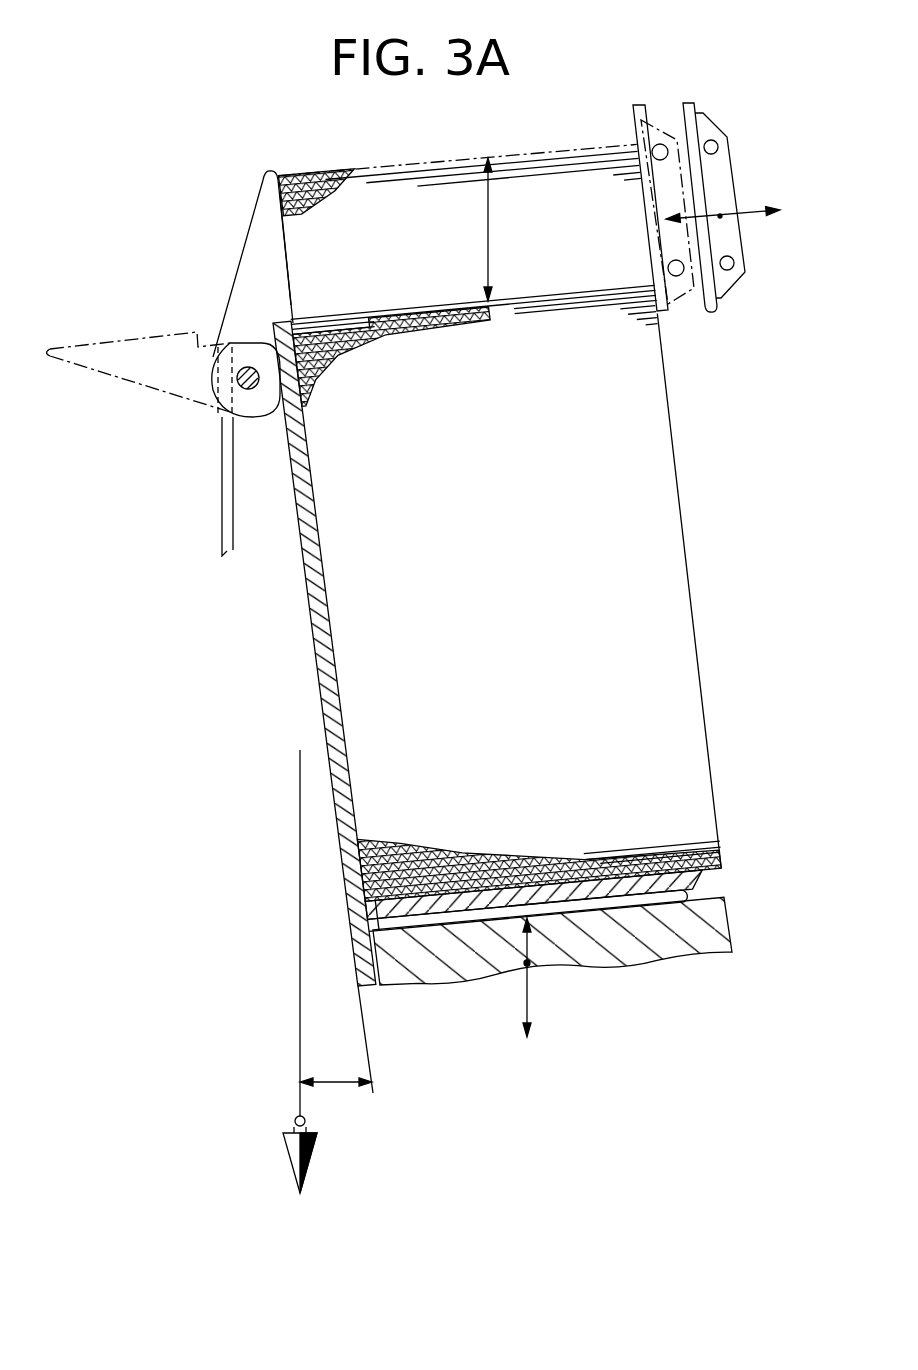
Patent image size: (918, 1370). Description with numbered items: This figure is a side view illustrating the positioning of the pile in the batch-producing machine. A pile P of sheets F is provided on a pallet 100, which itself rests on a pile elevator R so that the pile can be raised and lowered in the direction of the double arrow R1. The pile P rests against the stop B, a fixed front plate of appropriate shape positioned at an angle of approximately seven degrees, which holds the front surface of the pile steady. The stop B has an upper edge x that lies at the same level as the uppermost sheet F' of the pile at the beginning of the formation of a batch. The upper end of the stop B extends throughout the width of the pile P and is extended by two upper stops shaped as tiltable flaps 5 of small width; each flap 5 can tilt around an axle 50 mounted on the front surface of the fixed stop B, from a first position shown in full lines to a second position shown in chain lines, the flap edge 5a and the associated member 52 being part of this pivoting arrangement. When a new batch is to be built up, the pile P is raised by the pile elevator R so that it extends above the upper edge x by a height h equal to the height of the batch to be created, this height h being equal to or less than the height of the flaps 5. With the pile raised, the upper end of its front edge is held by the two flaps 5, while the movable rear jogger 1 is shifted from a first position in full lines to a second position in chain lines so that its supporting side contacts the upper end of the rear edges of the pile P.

The movable rear jogger 1 is at (704, 298).
The tiltable flaps 5 is at (251, 222).
The arm edge face 5a is at (288, 268).
The axle 50 is at (247, 368).
The lever strip 52 is at (222, 493).
The pallet 100 is at (437, 912).
The stop B is at (318, 657).
The sheets F is at (507, 596).
The uppermost sheet F' is at (459, 229).
The pile P is at (518, 605).
The pile elevator R is at (670, 923).
The double arrow R1 is at (528, 965).
The height h is at (502, 229).
The upper edge x is at (299, 313).